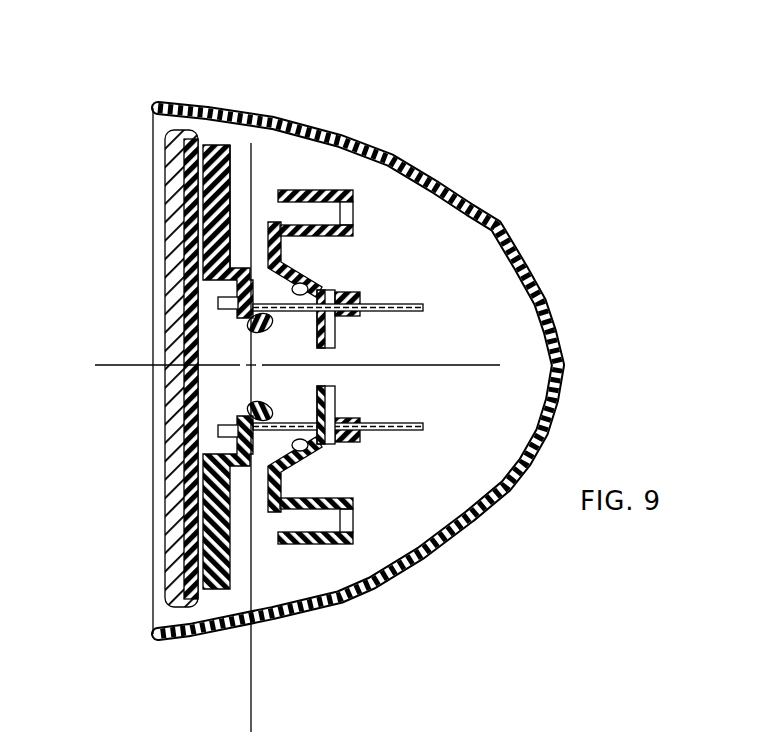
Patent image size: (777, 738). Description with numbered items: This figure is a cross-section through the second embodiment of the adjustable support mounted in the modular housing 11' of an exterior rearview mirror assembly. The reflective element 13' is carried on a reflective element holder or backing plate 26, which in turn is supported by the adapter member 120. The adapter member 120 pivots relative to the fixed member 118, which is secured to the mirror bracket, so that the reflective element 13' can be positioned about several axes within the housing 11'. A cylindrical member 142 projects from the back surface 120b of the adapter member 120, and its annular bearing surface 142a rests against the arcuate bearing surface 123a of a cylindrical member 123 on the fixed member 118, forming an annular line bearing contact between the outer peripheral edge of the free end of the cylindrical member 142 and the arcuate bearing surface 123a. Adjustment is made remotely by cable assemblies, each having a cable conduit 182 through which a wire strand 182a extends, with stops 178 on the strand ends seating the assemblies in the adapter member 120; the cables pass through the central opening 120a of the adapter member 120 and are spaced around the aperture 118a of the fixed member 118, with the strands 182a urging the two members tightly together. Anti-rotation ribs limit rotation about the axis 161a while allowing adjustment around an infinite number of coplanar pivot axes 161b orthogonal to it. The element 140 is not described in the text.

The modular housing 11' is at (348, 341).
The reflective element holder 26 is at (174, 112).
The reflective element 13' is at (152, 368).
The fixed member 118 is at (340, 176).
The aperture 118a is at (338, 385).
The adapter member 120 is at (217, 128).
The central opening 120a is at (247, 340).
The back surface 120b is at (250, 140).
The cylindrical member 123 is at (273, 222).
The arcuate bearing surface 123a is at (303, 284).
The lower support bracket 140 is at (318, 450).
The cylindrical member 142 is at (258, 465).
The annular bearing surface 142a is at (297, 458).
The axis 161a is at (117, 365).
The pivot axes 161b is at (252, 370).
The stops 178 is at (226, 440).
The cable conduit 182 is at (352, 312).
The wire strand 182a is at (412, 308).